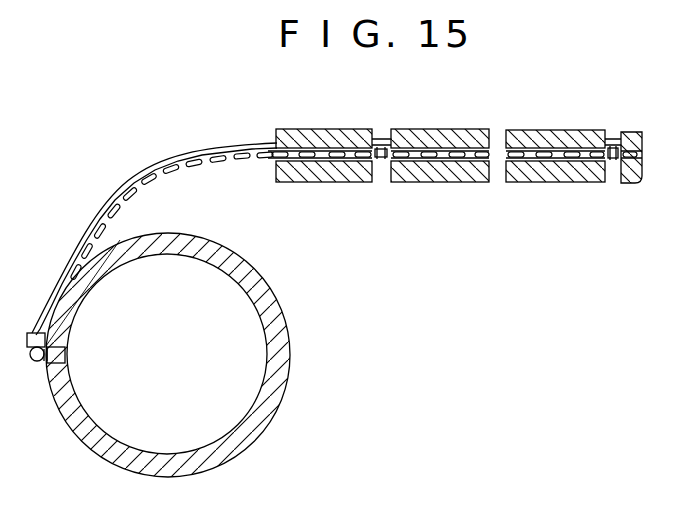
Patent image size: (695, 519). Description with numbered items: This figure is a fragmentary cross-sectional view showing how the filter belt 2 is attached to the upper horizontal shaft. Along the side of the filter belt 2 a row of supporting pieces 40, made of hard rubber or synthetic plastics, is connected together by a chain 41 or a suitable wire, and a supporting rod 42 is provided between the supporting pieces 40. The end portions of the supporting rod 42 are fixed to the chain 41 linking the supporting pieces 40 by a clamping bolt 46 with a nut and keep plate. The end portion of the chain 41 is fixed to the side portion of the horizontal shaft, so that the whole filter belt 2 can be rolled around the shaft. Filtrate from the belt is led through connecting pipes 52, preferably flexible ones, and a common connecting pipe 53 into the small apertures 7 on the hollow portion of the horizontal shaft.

The supporting pieces 40 is at (322, 130).
The chains 41 is at (430, 151).
The filter belt 2 is at (379, 141).
The clamping bolt 46 is at (378, 160).
The supporting rod 42 is at (386, 158).
The connecting pipes 52 is at (117, 200).
The common connecting pipe 53 is at (63, 373).
The small apertures 7 is at (63, 348).